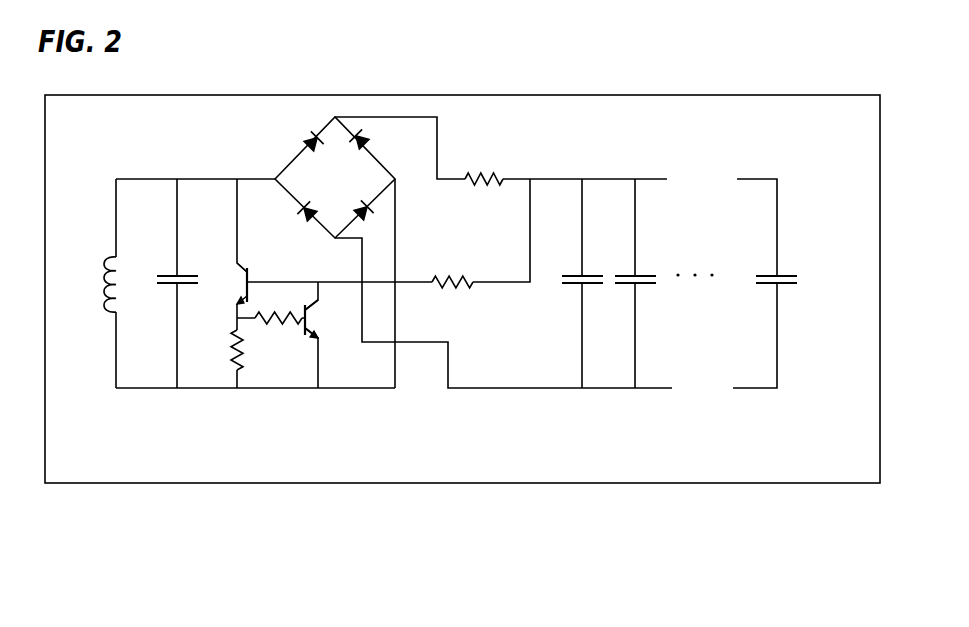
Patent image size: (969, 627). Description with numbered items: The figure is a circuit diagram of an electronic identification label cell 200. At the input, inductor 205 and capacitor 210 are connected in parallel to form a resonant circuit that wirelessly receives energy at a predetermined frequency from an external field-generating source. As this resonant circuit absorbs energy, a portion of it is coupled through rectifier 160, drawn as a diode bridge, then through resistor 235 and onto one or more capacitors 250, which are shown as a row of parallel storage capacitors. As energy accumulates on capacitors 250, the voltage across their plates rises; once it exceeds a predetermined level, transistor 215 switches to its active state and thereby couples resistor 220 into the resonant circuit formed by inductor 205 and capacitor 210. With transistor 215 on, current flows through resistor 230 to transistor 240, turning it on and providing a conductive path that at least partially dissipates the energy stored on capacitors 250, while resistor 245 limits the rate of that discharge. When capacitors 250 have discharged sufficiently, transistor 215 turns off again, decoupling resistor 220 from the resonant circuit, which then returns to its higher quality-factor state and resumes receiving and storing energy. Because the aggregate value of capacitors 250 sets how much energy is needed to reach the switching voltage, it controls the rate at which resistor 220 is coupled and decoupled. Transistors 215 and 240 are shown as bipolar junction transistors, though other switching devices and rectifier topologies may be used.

The electronic identification label cell 200 is at (462, 289).
The rectifier 160 is at (335, 177).
The inductor 205 is at (88, 284).
The capacitor 210 is at (169, 294).
The transistor 215 is at (256, 272).
The resistor 220 is at (221, 350).
The resistor 230 is at (278, 310).
The transistor 240 is at (329, 319).
The resistor 235 is at (484, 167).
The resistor 245 is at (453, 271).
The capacitors 250 is at (671, 291).